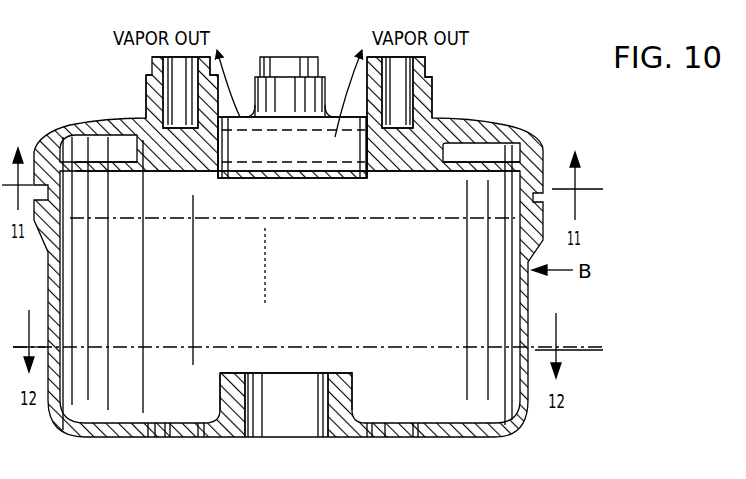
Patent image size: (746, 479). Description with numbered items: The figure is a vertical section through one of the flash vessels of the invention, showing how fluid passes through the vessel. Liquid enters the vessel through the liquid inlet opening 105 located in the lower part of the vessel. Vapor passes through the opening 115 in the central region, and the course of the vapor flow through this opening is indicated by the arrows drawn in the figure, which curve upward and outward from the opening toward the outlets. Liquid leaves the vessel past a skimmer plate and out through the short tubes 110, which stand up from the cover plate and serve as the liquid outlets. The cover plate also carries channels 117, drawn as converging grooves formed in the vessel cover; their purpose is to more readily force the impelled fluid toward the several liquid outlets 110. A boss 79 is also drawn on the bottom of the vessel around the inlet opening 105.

The short tubes 110 is at (183, 97).
The channels 117 is at (520, 134).
The opening 115 is at (363, 149).
The bottom boss 79 is at (338, 387).
The liquid inlet opening 105 is at (187, 433).